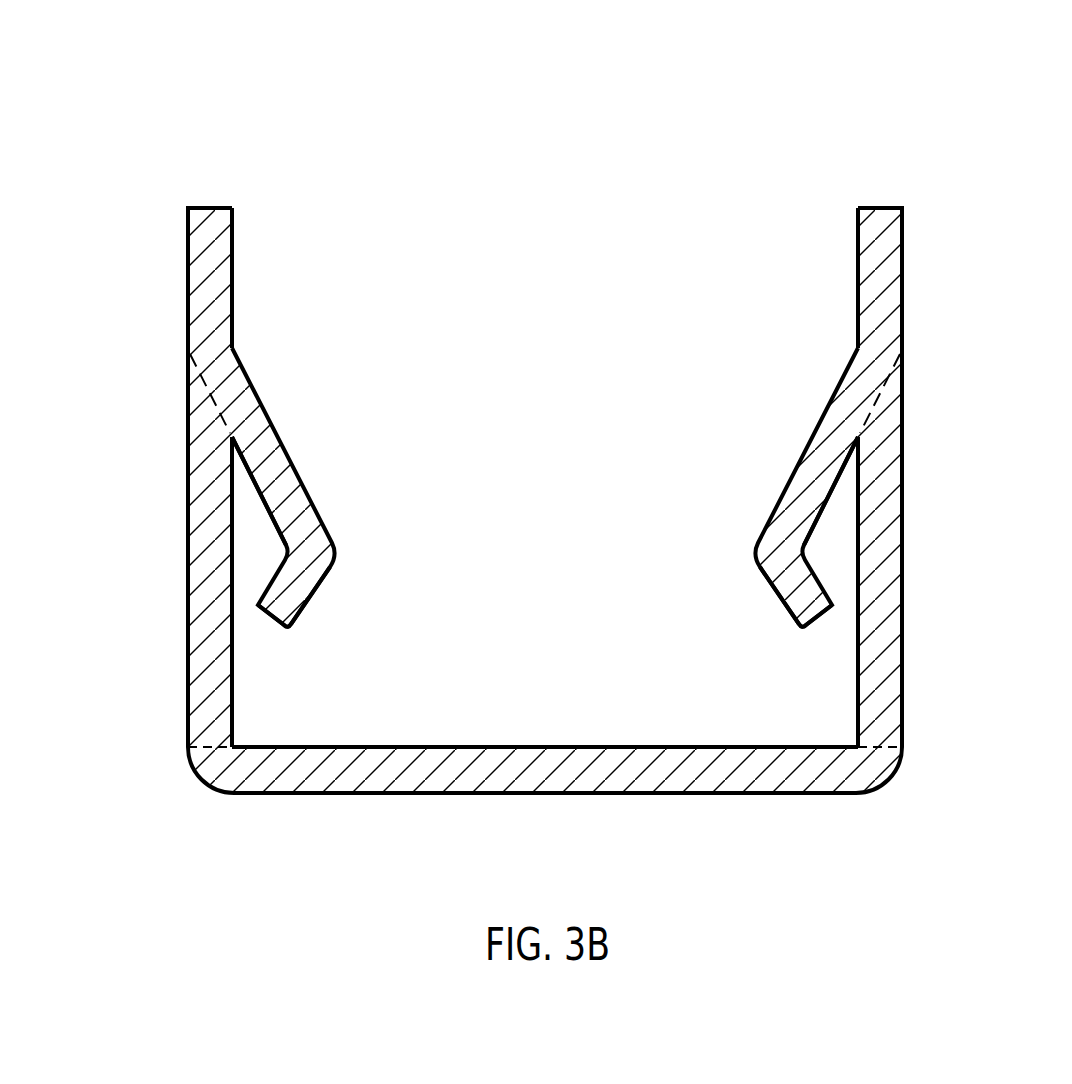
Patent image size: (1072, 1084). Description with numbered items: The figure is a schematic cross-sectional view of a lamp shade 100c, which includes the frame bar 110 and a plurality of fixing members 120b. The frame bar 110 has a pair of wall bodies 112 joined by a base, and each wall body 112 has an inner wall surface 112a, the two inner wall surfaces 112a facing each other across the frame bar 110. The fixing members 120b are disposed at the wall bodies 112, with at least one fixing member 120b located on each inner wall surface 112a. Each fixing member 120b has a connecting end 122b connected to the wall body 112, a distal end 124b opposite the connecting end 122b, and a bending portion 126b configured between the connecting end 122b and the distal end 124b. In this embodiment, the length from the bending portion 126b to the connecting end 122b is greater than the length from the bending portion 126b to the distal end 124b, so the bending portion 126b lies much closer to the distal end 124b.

The frame bar 110 is at (542, 417).
The wall body 112 is at (198, 273).
The inner wall surface 112a is at (236, 265).
The fixing member 120b is at (316, 459).
The connecting end 122b is at (193, 357).
The bending portion 126b is at (307, 555).
The distal end 124b is at (293, 597).
The lamp shade 100c is at (882, 888).